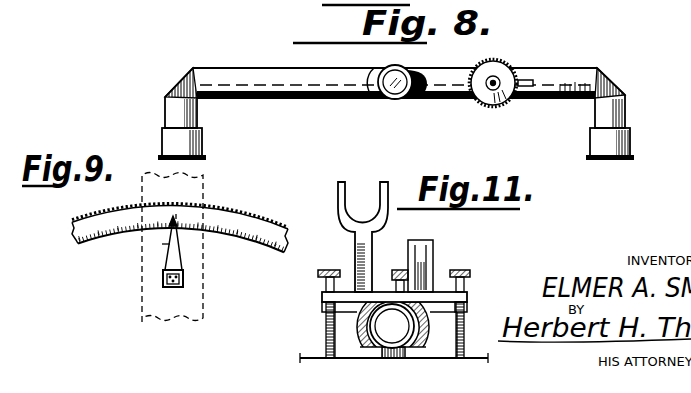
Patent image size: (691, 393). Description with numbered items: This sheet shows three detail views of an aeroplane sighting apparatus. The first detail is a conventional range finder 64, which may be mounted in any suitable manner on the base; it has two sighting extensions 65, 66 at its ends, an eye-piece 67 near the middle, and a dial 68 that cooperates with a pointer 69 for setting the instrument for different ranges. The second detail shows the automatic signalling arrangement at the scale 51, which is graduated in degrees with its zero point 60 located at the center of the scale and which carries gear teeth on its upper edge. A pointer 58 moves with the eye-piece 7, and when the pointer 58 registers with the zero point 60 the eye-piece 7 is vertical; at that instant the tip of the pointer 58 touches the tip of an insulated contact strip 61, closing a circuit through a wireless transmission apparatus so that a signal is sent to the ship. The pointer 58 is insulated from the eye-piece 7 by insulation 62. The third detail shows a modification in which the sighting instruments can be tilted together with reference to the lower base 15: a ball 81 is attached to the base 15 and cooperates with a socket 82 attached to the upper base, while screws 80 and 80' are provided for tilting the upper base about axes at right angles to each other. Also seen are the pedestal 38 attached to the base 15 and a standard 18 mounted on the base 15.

In FIG. 8, the range finder 64 is at (395, 97).
In FIG. 8, the sighting extension 65 is at (200, 143).
In FIG. 8, the sighting extension 66 is at (630, 140).
In FIG. 8, the eye-piece 67 is at (397, 95).
In FIG. 8, the dial 68 is at (492, 106).
In FIG. 8, the pointer 69 is at (529, 80).
In FIG. 9, the eye-piece 7 is at (204, 286).
In FIG. 9, the scale 51 is at (214, 238).
In FIG. 9, the pointer 58 is at (166, 246).
In FIG. 9, the zero point 60 is at (177, 214).
In FIG. 9, the insulated contact strip 61 is at (168, 222).
In FIG. 9, the insulation 62 is at (170, 294).
In FIG. 11, the pedestal 38 is at (363, 227).
In FIG. 11, the lower base 15 is at (356, 300).
In FIG. 11, the screw 80 is at (398, 312).
In FIG. 11, the screw 80' is at (398, 267).
In FIG. 11, the standard 18 is at (440, 240).
In FIG. 11, the ball 81 is at (392, 326).
In FIG. 11, the socket 82 is at (407, 332).